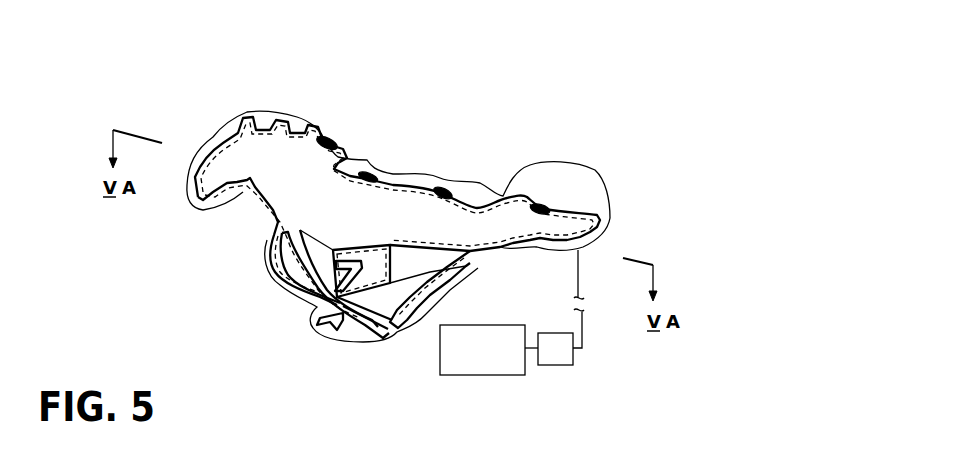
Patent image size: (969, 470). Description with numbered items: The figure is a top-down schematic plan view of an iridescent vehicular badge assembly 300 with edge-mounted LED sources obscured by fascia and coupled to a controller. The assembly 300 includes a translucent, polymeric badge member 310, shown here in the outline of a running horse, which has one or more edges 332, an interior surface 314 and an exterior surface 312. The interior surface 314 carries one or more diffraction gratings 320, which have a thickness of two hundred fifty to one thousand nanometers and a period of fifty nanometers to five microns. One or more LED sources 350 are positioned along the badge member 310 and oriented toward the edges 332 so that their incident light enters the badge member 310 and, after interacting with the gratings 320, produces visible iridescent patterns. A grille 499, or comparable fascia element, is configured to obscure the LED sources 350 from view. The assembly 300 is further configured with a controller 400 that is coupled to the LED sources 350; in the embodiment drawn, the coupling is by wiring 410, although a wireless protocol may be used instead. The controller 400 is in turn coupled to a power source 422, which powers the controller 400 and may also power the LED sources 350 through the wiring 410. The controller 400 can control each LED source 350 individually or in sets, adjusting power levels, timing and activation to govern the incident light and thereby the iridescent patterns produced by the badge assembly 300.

The iridescent vehicular badge assembly 300 is at (200, 99).
The badge member 310 is at (322, 157).
The exterior surface 312 is at (401, 200).
The interior surface 314 is at (470, 203).
The diffraction grating 320 is at (235, 155).
The edge 332 is at (430, 180).
The LED source 350 is at (603, 227).
The controller 400 is at (557, 365).
The wiring 410 is at (582, 328).
The power source 422 is at (465, 375).
The grille 499 is at (221, 242).